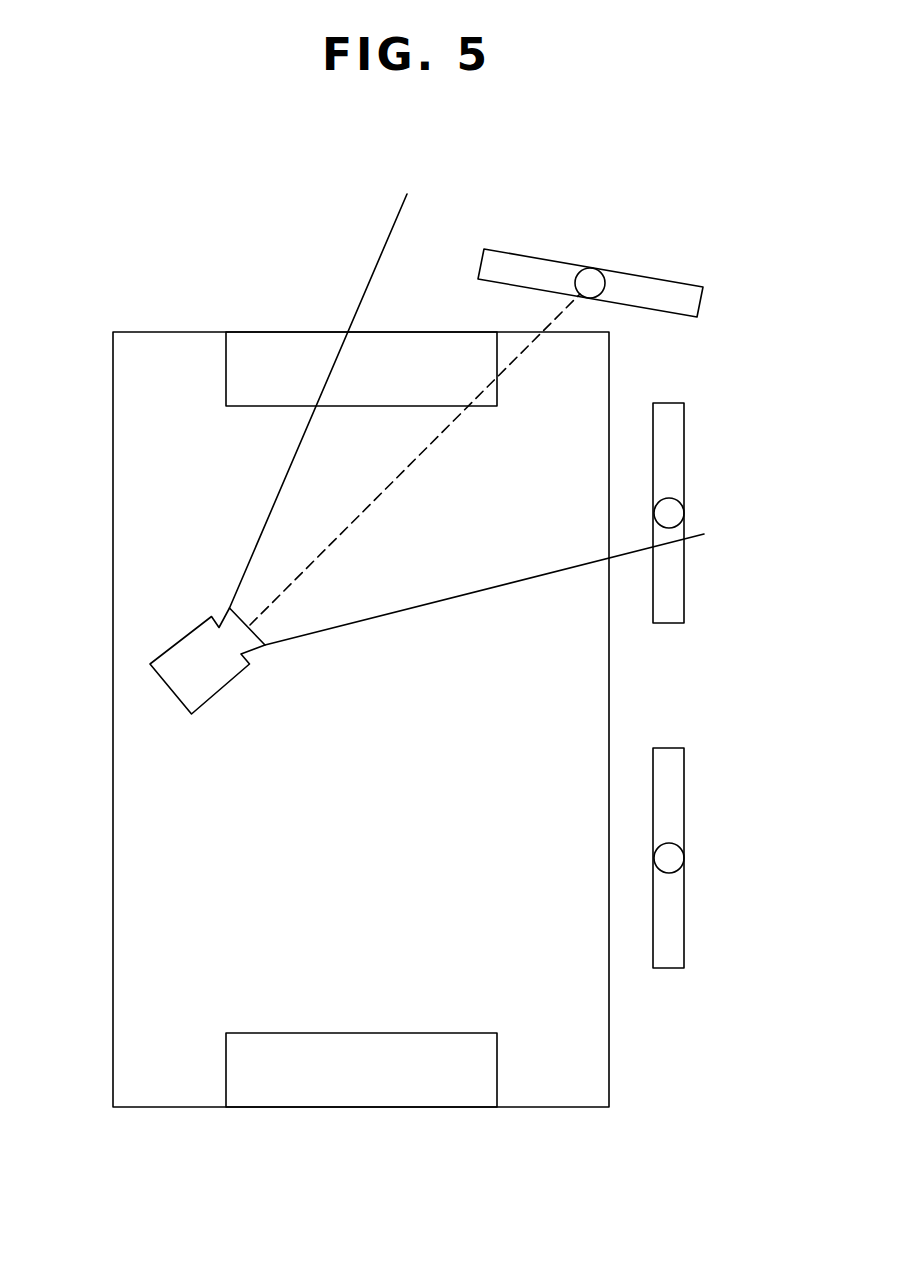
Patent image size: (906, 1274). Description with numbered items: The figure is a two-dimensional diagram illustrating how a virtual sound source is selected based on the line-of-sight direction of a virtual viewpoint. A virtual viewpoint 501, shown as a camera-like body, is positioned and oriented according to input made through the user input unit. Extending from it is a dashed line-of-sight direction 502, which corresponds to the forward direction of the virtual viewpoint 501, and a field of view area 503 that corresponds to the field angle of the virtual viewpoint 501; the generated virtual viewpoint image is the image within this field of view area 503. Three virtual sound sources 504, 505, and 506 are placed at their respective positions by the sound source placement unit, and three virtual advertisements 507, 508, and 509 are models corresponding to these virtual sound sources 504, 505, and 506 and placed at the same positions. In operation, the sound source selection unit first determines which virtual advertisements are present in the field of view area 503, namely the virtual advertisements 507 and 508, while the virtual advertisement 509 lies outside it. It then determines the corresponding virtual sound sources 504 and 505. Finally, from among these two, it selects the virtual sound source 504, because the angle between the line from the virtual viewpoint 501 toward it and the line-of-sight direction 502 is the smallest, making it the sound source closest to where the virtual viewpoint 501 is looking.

The virtual viewpoint 501 is at (178, 643).
The line-of-sight direction 502 is at (353, 523).
The field of view area 503 is at (282, 486).
The virtual sound source 504 is at (578, 269).
The virtual sound source 505 is at (676, 499).
The virtual sound source 506 is at (676, 845).
The virtual advertisement 507 is at (659, 278).
The virtual advertisement 508 is at (684, 577).
The virtual advertisement 509 is at (684, 921).